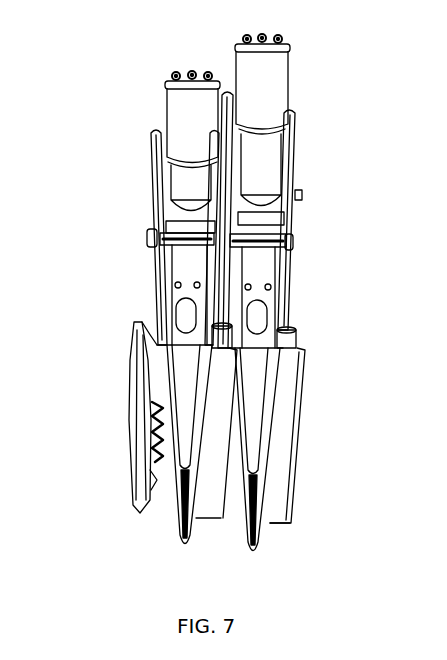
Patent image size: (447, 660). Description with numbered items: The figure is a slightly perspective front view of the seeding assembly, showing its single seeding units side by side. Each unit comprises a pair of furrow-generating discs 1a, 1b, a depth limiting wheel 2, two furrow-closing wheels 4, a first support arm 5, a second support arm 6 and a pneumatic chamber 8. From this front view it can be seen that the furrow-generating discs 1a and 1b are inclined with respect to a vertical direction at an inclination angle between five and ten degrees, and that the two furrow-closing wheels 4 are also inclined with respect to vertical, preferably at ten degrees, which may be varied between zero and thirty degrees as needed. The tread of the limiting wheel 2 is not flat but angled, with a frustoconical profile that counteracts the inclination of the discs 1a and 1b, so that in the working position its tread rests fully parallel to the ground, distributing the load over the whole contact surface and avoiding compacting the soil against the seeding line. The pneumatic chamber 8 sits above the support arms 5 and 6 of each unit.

The pneumatic chamber 8 is at (178, 119).
The first support arm 5 is at (152, 180).
The second support arm 6 is at (162, 293).
The furrow-closing wheels 4 is at (128, 382).
The depth limiting wheel 2 is at (283, 432).
The furrow-generating disc 1a is at (263, 503).
The furrow-generating disc 1b is at (172, 497).